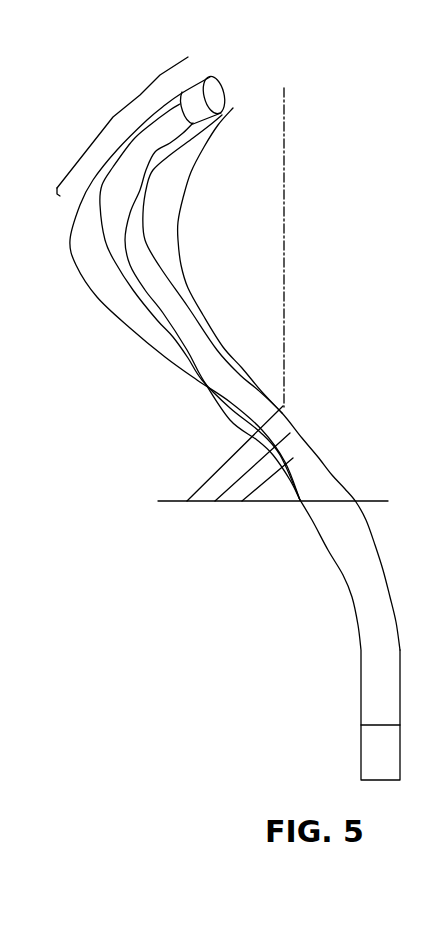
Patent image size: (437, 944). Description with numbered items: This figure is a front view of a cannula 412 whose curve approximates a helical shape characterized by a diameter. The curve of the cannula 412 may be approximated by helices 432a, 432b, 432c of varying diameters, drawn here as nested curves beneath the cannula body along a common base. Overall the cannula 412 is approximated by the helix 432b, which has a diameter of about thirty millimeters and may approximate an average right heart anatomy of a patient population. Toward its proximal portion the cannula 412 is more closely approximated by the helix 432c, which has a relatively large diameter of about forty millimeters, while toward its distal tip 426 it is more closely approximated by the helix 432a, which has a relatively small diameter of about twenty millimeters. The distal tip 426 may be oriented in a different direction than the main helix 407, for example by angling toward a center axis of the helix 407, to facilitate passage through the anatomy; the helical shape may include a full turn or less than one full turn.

The main helix 407 is at (286, 135).
The cannula 412 is at (210, 393).
The distal tip 426 is at (116, 109).
The helix 432a is at (293, 458).
The helix 432b is at (290, 433).
The helix 432c is at (283, 406).